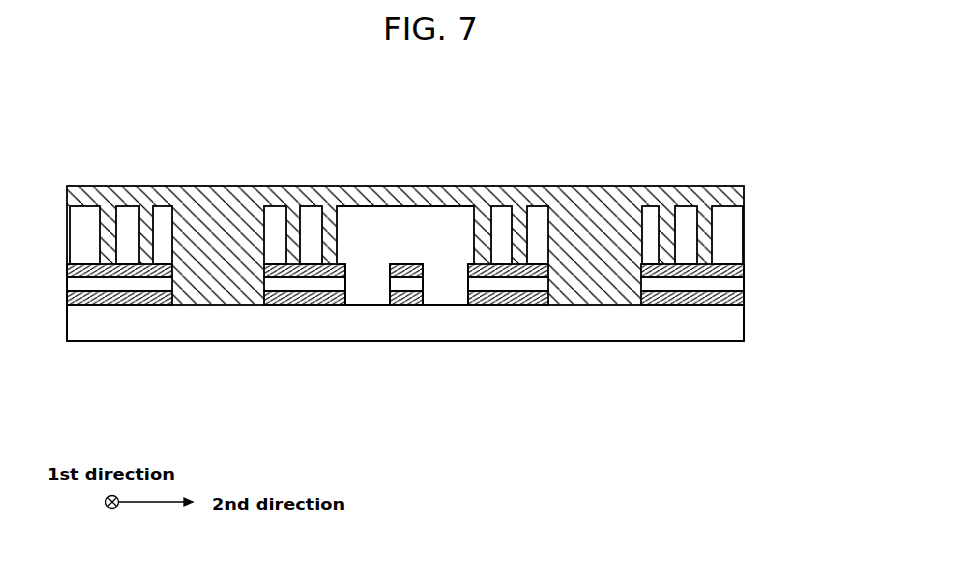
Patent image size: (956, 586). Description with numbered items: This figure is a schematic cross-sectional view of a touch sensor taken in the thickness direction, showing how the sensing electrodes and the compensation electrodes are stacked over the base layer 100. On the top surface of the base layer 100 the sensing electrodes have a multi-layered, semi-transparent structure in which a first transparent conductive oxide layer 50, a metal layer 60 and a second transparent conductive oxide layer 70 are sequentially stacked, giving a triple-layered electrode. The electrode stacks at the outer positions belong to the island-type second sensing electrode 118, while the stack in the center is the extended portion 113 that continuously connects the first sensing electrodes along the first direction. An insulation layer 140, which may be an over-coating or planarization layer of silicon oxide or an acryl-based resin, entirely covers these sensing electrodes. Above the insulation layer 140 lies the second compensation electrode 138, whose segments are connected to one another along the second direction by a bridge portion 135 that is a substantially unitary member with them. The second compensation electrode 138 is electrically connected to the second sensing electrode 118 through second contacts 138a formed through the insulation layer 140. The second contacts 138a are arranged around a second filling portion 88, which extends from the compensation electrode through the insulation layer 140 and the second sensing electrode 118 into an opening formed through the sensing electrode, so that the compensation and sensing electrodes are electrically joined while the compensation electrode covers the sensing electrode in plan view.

The first transparent conductive oxide layer 50 is at (132, 293).
The metal layer 60 is at (158, 283).
The second transparent conductive oxide layer 70 is at (162, 276).
The second filling portion 88 is at (215, 244).
The base layer 100 is at (743, 323).
The extended portion 113 is at (482, 405).
The second sensing electrode 118 is at (183, 405).
The bridge portion 135 is at (412, 207).
The second compensation electrode 138 is at (145, 187).
The second contact 138a is at (340, 241).
The insulation layer 140 is at (735, 235).